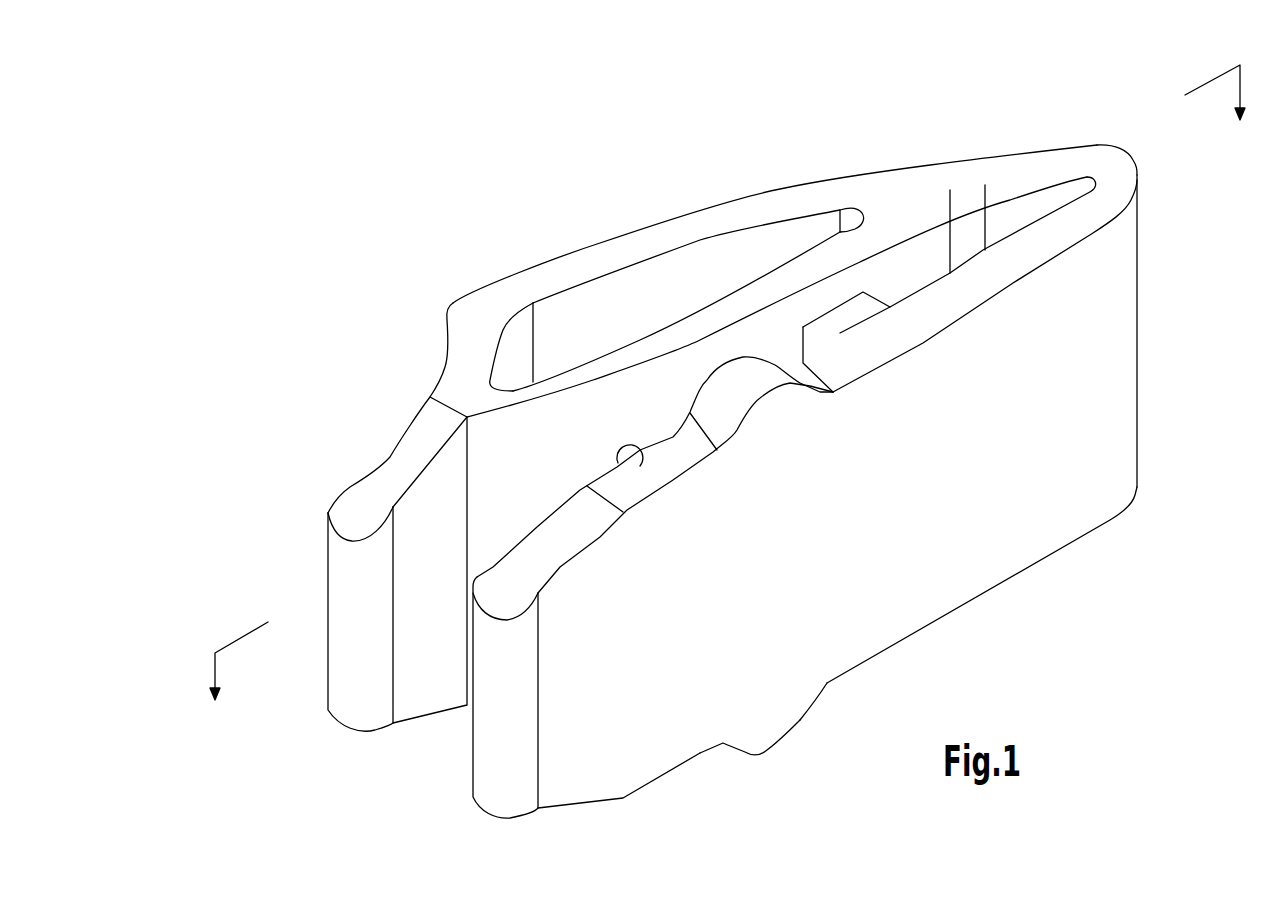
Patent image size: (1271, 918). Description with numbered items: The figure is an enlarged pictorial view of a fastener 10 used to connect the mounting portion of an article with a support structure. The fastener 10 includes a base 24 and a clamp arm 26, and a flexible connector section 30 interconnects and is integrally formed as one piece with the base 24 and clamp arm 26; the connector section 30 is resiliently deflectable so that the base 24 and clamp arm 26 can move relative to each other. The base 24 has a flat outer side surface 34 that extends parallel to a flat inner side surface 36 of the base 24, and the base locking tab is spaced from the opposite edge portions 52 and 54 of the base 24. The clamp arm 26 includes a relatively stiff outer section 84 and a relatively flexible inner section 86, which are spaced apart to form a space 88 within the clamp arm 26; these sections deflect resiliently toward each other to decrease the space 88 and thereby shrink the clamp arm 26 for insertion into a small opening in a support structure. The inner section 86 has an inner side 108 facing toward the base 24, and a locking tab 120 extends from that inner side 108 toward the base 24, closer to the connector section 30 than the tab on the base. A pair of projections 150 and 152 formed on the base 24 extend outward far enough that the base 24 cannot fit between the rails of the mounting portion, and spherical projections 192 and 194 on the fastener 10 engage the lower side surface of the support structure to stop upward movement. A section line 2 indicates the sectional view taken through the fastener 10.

The fastener 10 is at (548, 199).
The clamp arm 26 is at (773, 176).
The connector section 30 is at (1141, 158).
The outer section 84 is at (560, 263).
The space 88 is at (667, 283).
The inner section 86 is at (587, 377).
The edge portion 54 is at (957, 303).
The inner side 108 is at (923, 250).
The locking tab 120 is at (855, 310).
The outer side surface 34 is at (1037, 443).
The base 24 is at (1033, 562).
The edge portion 52 is at (903, 637).
The projection 150 is at (757, 738).
The projection 152 is at (775, 403).
The inner side surface 36 is at (640, 466).
The spherical projection 192 is at (357, 588).
The spherical projection 194 is at (490, 733).
The section line 2- 2 is at (726, 404).